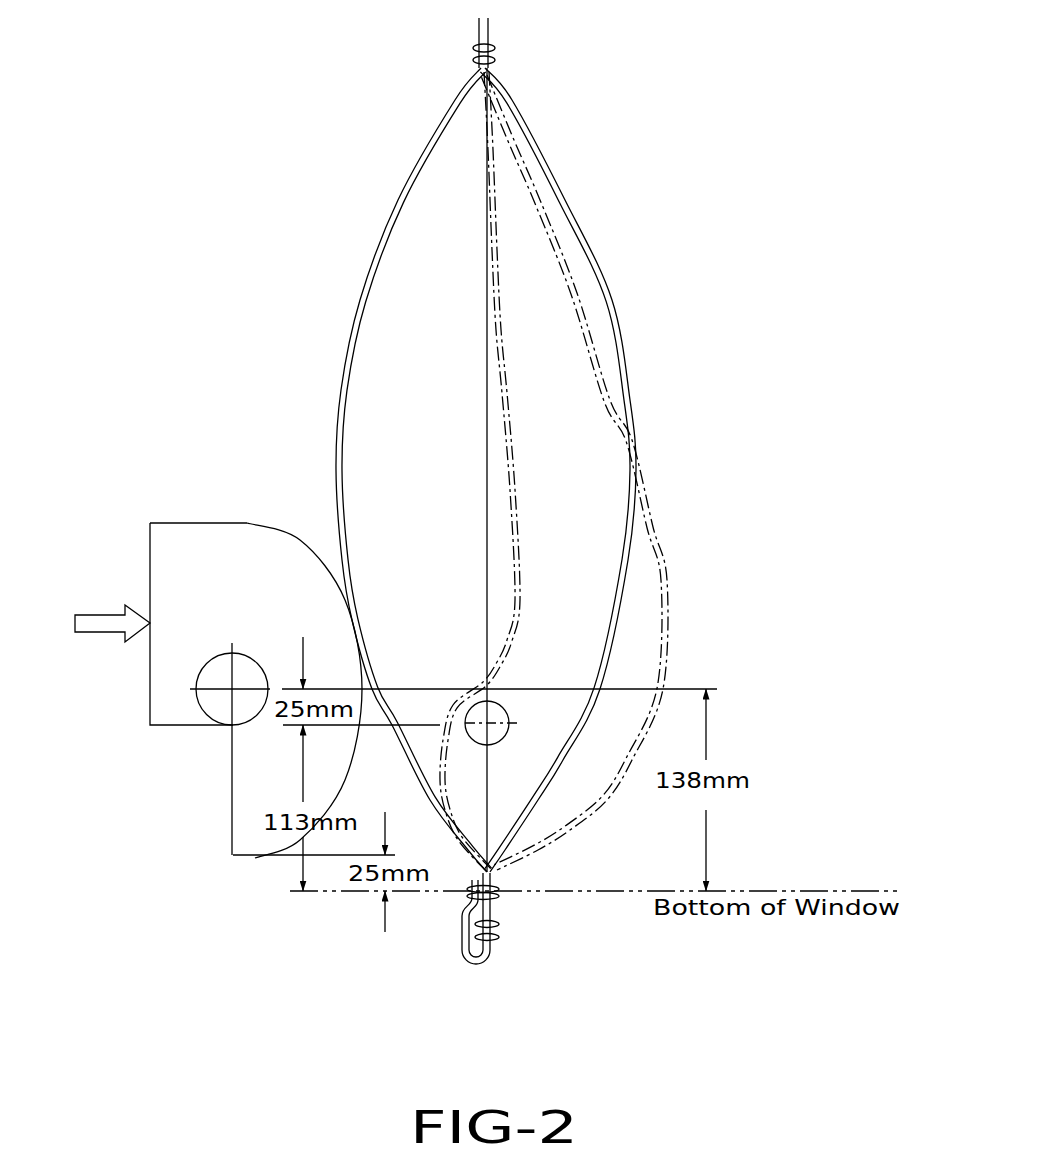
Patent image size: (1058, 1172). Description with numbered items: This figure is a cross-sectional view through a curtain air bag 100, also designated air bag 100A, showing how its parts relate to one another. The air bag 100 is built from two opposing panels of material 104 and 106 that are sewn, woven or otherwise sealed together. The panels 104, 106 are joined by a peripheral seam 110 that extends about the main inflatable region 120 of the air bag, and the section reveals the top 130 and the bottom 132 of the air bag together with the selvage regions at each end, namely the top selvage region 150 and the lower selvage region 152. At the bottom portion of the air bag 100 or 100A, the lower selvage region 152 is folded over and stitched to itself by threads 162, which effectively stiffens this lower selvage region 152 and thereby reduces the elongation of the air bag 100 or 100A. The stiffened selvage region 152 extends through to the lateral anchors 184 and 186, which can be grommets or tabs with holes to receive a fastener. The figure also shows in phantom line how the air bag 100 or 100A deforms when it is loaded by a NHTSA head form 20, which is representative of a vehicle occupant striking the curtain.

The NHTSA head form 20 is at (185, 522).
The curtain air bag 100 is at (672, 218).
The air bag 100A is at (549, 470).
The panel of material 104 is at (348, 343).
The panel of material 106 is at (628, 342).
The peripheral seam 110 is at (478, 62).
The main inflatable region 120 is at (566, 468).
The top 130 is at (478, 34).
The top selvage region 150 is at (475, 34).
The bottom 132 is at (460, 938).
The lower selvage region 152 is at (410, 953).
The threads 162 is at (497, 893).
The lateral anchor 184 is at (502, 707).
The lateral anchor 186 is at (638, 674).